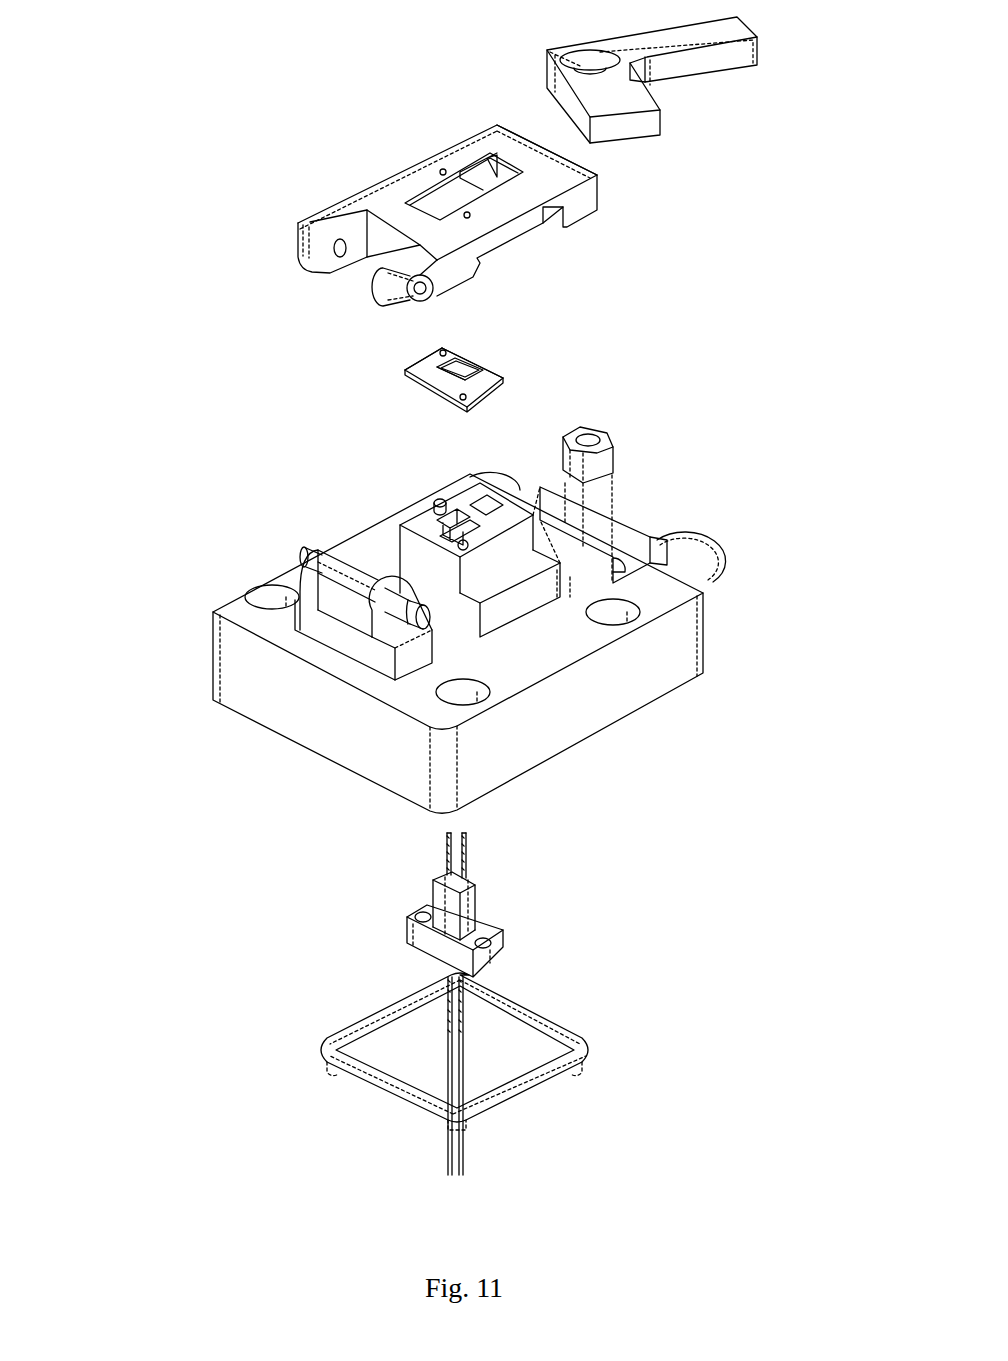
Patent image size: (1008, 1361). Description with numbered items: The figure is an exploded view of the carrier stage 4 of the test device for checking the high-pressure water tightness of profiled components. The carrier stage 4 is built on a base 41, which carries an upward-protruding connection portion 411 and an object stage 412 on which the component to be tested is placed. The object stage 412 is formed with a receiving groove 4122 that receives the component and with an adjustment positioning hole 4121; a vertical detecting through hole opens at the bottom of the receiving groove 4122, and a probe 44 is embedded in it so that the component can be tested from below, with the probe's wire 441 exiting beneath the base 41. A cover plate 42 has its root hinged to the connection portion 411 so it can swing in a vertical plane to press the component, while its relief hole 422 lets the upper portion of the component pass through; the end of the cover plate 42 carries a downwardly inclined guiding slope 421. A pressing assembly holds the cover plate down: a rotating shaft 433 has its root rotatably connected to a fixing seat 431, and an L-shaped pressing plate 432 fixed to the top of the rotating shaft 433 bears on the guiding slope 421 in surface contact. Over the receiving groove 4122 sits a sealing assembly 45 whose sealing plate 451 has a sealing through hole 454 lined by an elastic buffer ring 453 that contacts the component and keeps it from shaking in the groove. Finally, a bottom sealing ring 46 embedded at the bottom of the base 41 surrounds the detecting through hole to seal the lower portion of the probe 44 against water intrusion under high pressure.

The carrier stage 4 is at (195, 373).
The base 41 is at (610, 713).
The connection portion 411 is at (360, 652).
The object stage 412 is at (507, 603).
The adjustment positioning hole 4121 is at (490, 497).
The receiving groove 4122 is at (430, 512).
The cover plate 42 is at (345, 205).
The guiding slope 421 is at (487, 137).
The relief hole 422 is at (433, 192).
The fixing seat 431 is at (657, 547).
The pressing plate 432 is at (743, 57).
The rotating shaft 433 is at (603, 457).
The probe 44 is at (473, 897).
The connector pins 441 is at (443, 1143).
The sealing assembly 45 is at (476, 327).
The sealing plate 451 is at (415, 368).
The buffer ring 453 is at (487, 370).
The sealing through hole 454 is at (442, 383).
The bottom sealing ring 46 is at (360, 1070).